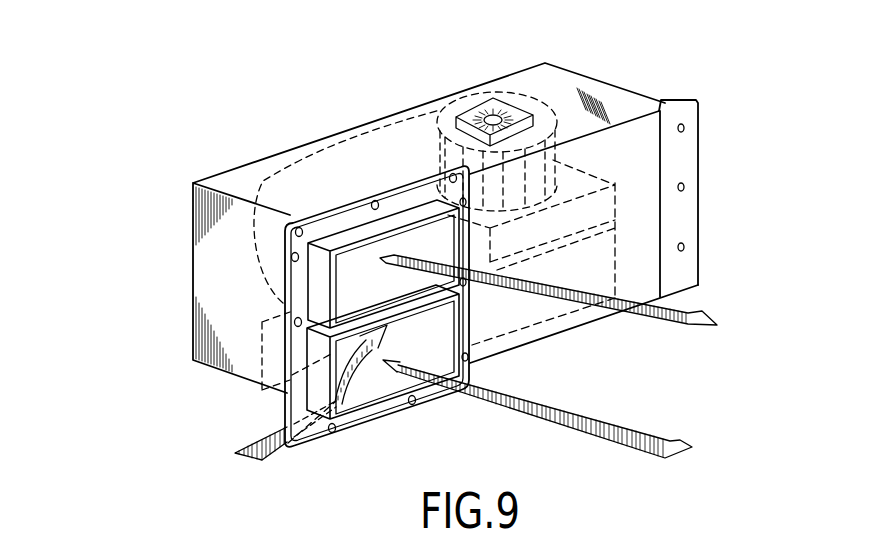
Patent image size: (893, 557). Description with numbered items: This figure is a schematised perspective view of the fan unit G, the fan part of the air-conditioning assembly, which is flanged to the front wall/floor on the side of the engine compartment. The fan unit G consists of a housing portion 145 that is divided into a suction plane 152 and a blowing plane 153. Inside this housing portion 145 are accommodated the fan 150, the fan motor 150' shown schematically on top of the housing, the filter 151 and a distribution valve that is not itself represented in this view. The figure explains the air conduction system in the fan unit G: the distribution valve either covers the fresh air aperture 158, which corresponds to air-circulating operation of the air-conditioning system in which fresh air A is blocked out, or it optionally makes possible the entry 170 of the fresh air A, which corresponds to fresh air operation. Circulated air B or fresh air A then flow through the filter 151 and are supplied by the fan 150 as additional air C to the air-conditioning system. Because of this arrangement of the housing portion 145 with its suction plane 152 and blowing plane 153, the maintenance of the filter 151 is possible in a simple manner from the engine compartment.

The blowing plane 153 is at (383, 150).
The housing portion 145 is at (613, 105).
The fan motor 150' is at (479, 87).
The fan 150 is at (517, 110).
The filter 151 is at (600, 207).
The suction plane 152 is at (597, 265).
The fresh air aperture 158 is at (275, 363).
The entry of the fresh air 170 is at (365, 377).
The fresh air A is at (280, 444).
The circulated air B is at (546, 419).
The additional air C is at (563, 297).
The fan unit G is at (186, 298).